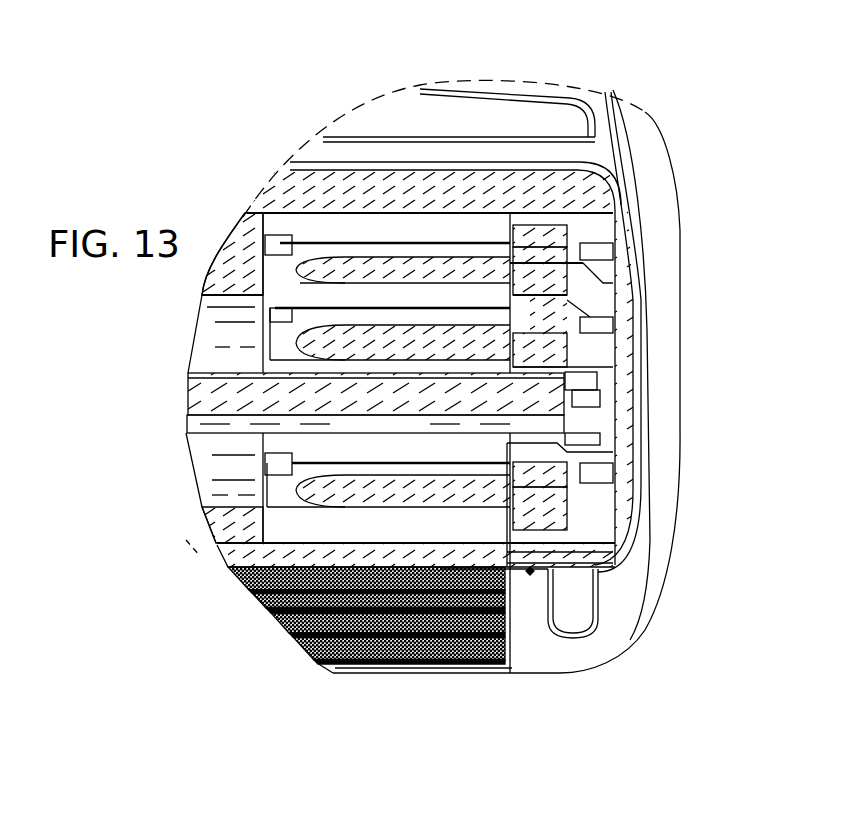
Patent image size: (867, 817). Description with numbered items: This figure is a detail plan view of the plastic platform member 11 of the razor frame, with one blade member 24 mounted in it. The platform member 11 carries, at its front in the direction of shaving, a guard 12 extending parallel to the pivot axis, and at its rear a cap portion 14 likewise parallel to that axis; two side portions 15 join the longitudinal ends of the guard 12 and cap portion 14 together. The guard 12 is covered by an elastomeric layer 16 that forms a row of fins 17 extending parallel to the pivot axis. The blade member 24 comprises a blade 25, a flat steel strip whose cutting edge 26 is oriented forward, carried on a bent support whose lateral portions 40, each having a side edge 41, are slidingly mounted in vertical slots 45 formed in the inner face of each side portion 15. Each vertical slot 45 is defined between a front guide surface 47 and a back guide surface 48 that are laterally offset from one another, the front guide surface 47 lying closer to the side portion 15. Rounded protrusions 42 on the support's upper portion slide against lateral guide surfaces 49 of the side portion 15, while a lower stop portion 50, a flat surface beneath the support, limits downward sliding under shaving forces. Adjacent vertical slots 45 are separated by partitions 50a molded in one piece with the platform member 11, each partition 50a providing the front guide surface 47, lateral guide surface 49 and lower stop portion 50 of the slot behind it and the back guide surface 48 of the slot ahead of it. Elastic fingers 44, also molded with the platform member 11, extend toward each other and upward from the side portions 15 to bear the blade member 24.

The platform member 11 is at (681, 524).
The guard 12 is at (480, 672).
The cap portion 14 is at (519, 86).
The side portion 15 is at (668, 353).
The elastomeric layer 16 is at (363, 655).
The fins 17 is at (330, 662).
The blade member 24 is at (186, 410).
The blade 25 is at (186, 392).
The cutting edge 26 is at (200, 440).
The lateral portion 40 is at (622, 338).
The side edge 41 is at (606, 366).
The rounded protrusion 42 is at (603, 384).
The elastic fingers 44 is at (268, 210).
The vertical slots 45 is at (602, 262).
The front guide surface 47 is at (612, 230).
The back guide surface 48 is at (517, 303).
The lateral guide surfaces 49 is at (609, 97).
The lower stop portion 50 is at (522, 270).
The partitions 50a is at (493, 268).